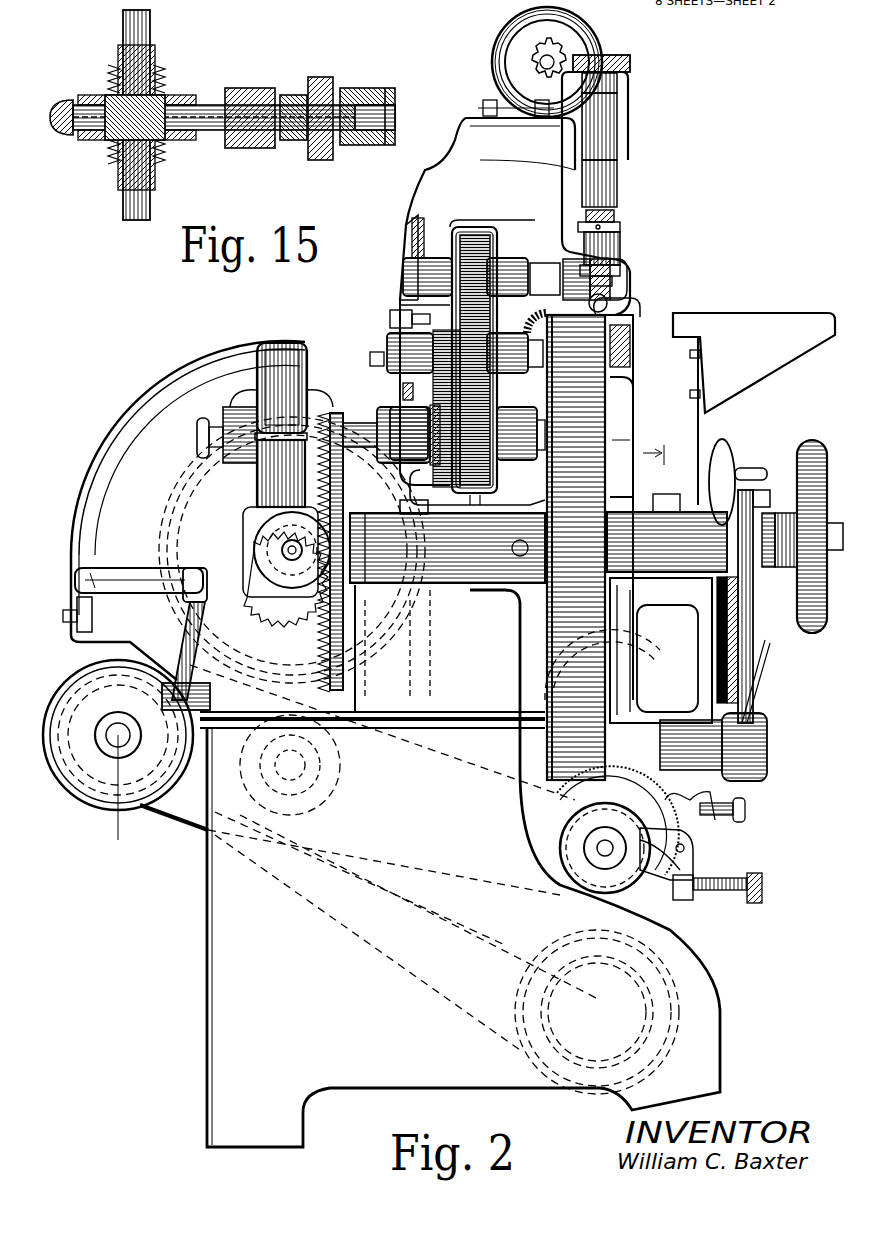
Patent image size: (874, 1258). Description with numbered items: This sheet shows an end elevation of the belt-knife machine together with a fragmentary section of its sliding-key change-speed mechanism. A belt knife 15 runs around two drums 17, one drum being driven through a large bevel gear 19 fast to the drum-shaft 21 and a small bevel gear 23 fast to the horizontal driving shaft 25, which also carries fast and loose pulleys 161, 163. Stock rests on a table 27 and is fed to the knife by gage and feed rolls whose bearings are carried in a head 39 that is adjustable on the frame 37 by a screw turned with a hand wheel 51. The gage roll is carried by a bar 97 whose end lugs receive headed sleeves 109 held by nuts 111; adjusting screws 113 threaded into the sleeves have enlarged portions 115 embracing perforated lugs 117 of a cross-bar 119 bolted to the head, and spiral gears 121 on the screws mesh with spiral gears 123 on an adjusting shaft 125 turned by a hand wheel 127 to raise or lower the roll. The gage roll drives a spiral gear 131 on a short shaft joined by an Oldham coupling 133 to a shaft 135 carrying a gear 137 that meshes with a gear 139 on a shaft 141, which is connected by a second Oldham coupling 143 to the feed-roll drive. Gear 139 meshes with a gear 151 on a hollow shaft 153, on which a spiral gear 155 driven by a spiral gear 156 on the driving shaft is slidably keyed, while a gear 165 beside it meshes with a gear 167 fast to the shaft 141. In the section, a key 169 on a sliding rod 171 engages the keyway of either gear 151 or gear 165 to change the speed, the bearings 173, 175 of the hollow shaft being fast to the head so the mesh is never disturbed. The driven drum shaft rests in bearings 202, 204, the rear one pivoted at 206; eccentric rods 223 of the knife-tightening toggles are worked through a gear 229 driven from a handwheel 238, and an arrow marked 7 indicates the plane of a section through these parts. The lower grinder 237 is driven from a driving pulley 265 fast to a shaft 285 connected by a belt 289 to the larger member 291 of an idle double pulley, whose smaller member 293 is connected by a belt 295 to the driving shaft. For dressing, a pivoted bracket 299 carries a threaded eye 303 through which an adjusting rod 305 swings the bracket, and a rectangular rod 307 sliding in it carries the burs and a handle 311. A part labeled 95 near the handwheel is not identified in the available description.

In FIG. 2, the section line 7 is at (661, 453).
In FIG. 2, the belt knife 15 is at (590, 370).
In FIG. 2, the drums 17 is at (600, 380).
In FIG. 2, the large bevel gear 19 is at (330, 688).
In FIG. 2, the drum-shaft 21 is at (478, 585).
In FIG. 2, the small bevel gear 23 is at (190, 500).
In FIG. 15, the driving shaft 25 is at (128, 208).
In FIG. 2, the driving shaft 25 is at (280, 540).
In FIG. 2, the table 27 is at (745, 325).
In FIG. 2, the frame 37 is at (683, 967).
In FIG. 2, the adjustable head 39 is at (475, 145).
In FIG. 2, the hand wheel 51 is at (812, 455).
In FIG. 2, the post 95 is at (780, 600).
In FIG. 2, the bar 97 is at (650, 195).
In FIG. 2, the headed sleeves 109 is at (618, 227).
In FIG. 2, the nuts 111 is at (615, 270).
In FIG. 2, the adjusting screws 113 is at (614, 214).
In FIG. 2, the enlarged portions 115 is at (612, 84).
In FIG. 2, the perforated lugs 117 is at (620, 120).
In FIG. 2, the cross-bar 119 is at (478, 120).
In FIG. 2, the spiral gears 121 is at (628, 62).
In FIG. 2, the spiral gears 123 is at (540, 62).
In FIG. 2, the adjusting shaft 125 is at (535, 55).
In FIG. 2, the hand wheel 127 is at (595, 45).
In FIG. 2, the spiral gear 131 is at (662, 273).
In FIG. 2, the Oldham coupling 133 is at (548, 262).
In FIG. 2, the shaft 135 is at (415, 268).
In FIG. 2, the gear 137 is at (470, 235).
In FIG. 2, the gear 139 is at (405, 285).
In FIG. 2, the shaft 141 is at (370, 358).
In FIG. 2, the second Oldham coupling 143 is at (467, 421).
In FIG. 15, the gear 151 is at (322, 77).
In FIG. 2, the gear 151 is at (490, 490).
In FIG. 15, the hollow shaft 153 is at (200, 102).
In FIG. 2, the hollow shaft 153 is at (357, 423).
In FIG. 15, the spiral gear 155 is at (112, 72).
In FIG. 2, the spiral gear 155 is at (268, 400).
In FIG. 15, the spiral gear 156 is at (158, 72).
In FIG. 2, the fast pulley 161 is at (240, 440).
In FIG. 2, the loose pulley 163 is at (205, 435).
In FIG. 15, the gear 165 is at (293, 95).
In FIG. 2, the gear 165 is at (395, 410).
In FIG. 2, the gear 167 is at (390, 316).
In FIG. 15, the key 169 is at (345, 108).
In FIG. 15, the sliding rod 171 is at (57, 100).
In FIG. 2, the sliding rod 171 is at (270, 410).
In FIG. 15, the bearing 173 is at (252, 88).
In FIG. 2, the bearing 173 is at (340, 470).
In FIG. 15, the bearing 175 is at (378, 145).
In FIG. 2, the bearing 175 is at (525, 432).
In FIG. 2, the front bearing 202 is at (682, 545).
In FIG. 2, the rear bearing 204 is at (450, 588).
In FIG. 2, the pivot 206 is at (415, 585).
In FIG. 2, the eccentric rods 223 is at (705, 805).
In FIG. 2, the gear 229 is at (755, 778).
In FIG. 2, the lower grinder 237 is at (650, 905).
In FIG. 2, the handwheel 238 is at (743, 468).
In FIG. 2, the driving pulley 265 is at (78, 780).
In FIG. 2, the shaft 285 is at (118, 786).
In FIG. 2, the belt 289 is at (283, 912).
In FIG. 2, the larger member of idle double pulley 291 is at (567, 1000).
In FIG. 2, the smaller member of idle double pulley 293 is at (645, 1020).
In FIG. 2, the belt 295 is at (370, 830).
In FIG. 2, the bracket 299 is at (695, 870).
In FIG. 2, the threaded eye 303 is at (691, 897).
In FIG. 2, the adjusting rod 305 is at (727, 896).
In FIG. 2, the rectangular rod 307 is at (690, 830).
In FIG. 2, the handle 311 is at (745, 812).